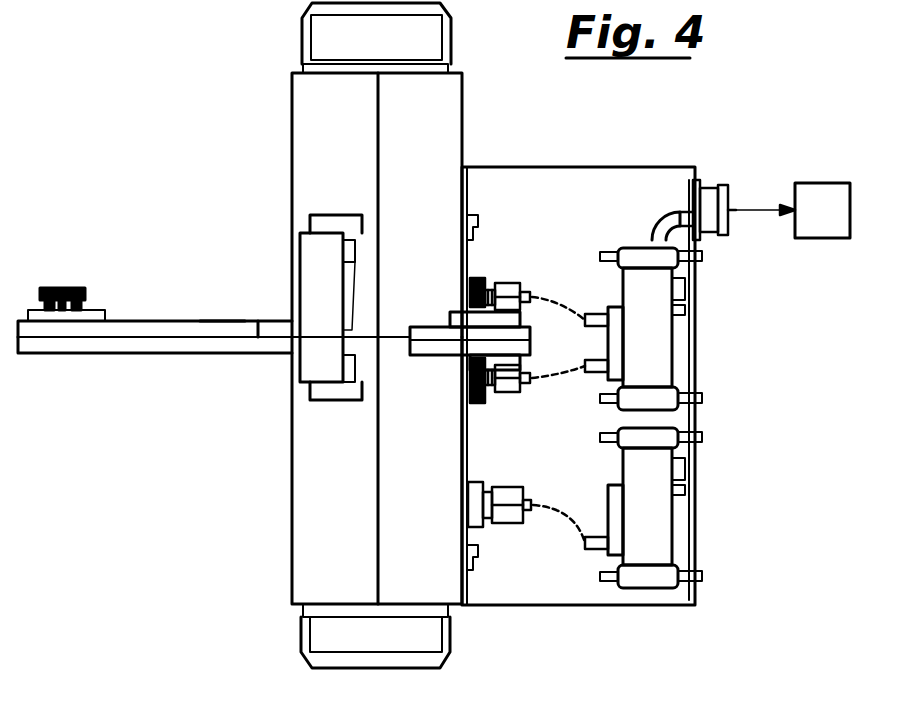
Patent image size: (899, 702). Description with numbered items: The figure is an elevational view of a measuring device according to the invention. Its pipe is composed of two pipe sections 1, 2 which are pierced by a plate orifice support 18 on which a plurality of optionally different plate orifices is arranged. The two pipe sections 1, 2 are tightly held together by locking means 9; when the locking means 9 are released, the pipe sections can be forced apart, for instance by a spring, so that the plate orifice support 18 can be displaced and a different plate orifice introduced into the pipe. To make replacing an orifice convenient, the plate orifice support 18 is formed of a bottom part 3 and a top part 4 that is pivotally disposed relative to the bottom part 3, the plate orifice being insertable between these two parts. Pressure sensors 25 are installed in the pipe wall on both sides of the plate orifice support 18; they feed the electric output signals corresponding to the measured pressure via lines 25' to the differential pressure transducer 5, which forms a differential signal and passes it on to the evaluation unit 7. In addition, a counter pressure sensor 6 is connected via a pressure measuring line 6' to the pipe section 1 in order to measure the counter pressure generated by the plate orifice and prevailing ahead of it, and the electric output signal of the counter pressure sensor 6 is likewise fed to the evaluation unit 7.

The pipe section 1 is at (322, 456).
The pipe section 2 is at (318, 128).
The bottom part 3 is at (118, 347).
The top part 4 is at (137, 325).
The differential pressure transducer 5 is at (652, 343).
The counter pressure sensor 6 is at (688, 508).
The pressure measuring line 6' is at (538, 503).
The evaluation unit 7 is at (833, 227).
The locking means 9 is at (323, 352).
The plate orifice support 18 is at (222, 318).
The pressure sensor 25 is at (518, 337).
The lines 25' is at (570, 337).